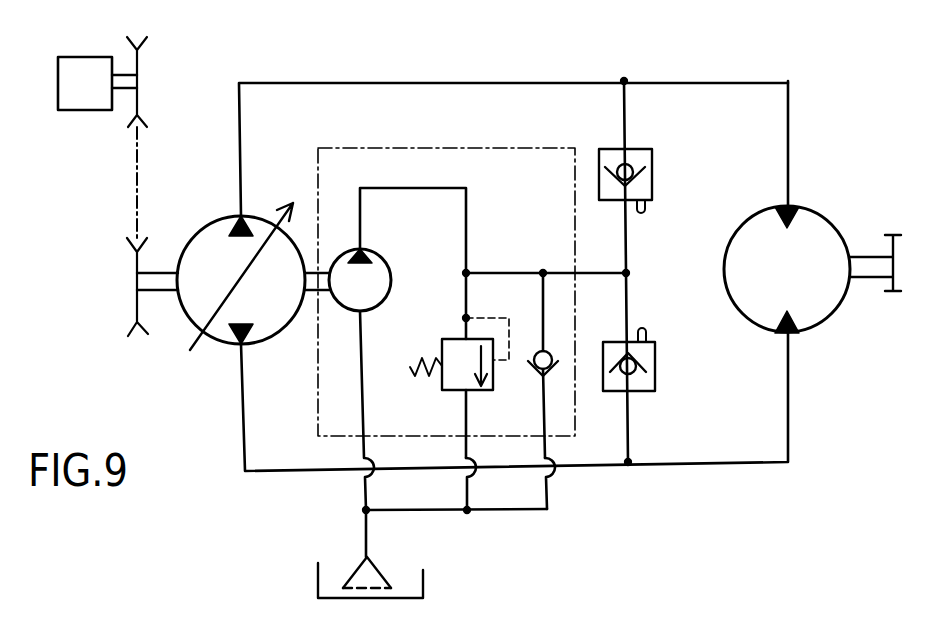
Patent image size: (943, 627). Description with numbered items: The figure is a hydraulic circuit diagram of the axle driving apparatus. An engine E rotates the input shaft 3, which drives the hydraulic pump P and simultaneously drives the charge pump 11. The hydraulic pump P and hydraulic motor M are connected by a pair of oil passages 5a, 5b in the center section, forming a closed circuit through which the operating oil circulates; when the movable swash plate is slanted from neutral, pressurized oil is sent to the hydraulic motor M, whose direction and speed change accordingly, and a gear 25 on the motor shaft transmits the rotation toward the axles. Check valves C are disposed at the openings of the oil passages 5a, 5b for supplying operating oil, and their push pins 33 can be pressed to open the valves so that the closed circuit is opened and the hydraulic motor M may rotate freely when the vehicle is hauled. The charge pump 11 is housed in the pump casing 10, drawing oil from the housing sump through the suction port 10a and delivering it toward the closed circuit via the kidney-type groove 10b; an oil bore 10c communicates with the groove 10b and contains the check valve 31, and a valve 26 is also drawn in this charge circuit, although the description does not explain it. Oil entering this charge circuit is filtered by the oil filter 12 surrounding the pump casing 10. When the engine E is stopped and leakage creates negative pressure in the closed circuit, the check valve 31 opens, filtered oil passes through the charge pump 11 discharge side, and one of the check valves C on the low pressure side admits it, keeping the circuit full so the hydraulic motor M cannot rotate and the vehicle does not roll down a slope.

The engine E is at (97, 83).
The hydraulic pump P is at (210, 186).
The hydraulic motor M is at (846, 200).
The check valves C is at (673, 158).
The input shaft 3 is at (162, 285).
The oil passage 5a is at (545, 82).
The oil passage 5b is at (710, 465).
The pump casing 10 is at (410, 148).
The suction port 10a is at (363, 437).
The kidney-type groove 10b is at (585, 263).
The oil bore 10c is at (518, 510).
The charge pump 11 is at (388, 259).
The oil filter 12 is at (355, 568).
The gear 25 is at (898, 292).
The relief valve 26 is at (410, 366).
The check valve 31 is at (553, 378).
The push pins 33 is at (646, 208).